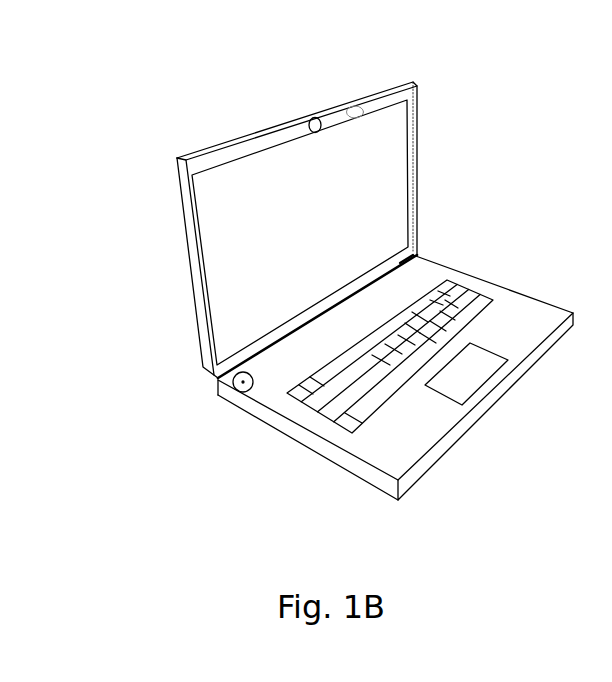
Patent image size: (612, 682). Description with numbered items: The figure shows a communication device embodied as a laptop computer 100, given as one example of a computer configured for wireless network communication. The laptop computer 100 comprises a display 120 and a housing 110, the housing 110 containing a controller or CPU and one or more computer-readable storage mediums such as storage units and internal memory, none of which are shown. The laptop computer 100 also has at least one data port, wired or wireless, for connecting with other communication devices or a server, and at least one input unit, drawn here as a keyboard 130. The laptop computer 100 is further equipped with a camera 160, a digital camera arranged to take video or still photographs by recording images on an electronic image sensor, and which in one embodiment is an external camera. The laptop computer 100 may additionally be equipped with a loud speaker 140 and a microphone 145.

The laptop computer 100 is at (244, 137).
The housing 110 is at (177, 158).
The display 120 is at (212, 244).
The keyboard 130 is at (297, 405).
The loud speaker 140 is at (360, 106).
The microphone 145 is at (218, 378).
The camera 160 is at (313, 119).